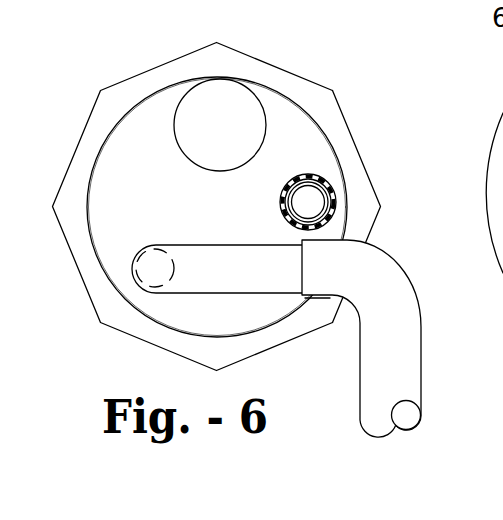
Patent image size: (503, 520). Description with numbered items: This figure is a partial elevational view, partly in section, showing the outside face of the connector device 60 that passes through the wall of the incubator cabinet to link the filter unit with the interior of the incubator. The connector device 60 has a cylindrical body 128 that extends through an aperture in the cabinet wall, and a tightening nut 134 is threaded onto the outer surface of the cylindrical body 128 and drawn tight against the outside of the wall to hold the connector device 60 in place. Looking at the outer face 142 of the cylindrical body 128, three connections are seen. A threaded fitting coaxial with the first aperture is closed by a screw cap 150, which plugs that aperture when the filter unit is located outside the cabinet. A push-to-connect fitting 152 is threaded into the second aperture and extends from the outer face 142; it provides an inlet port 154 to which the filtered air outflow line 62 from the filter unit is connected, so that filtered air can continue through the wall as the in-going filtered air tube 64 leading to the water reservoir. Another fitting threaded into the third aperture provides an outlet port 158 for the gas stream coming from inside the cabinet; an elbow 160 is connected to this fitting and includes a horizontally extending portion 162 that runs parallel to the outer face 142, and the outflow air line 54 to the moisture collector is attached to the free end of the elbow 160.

The outflow air line 54 is at (380, 338).
The connector device 60 is at (207, 195).
The filtered air outflow line 62 is at (364, 194).
The in-going filtered air tube 64 is at (483, 224).
The cylindrical body 128 is at (250, 192).
The tightening nut 134 is at (381, 207).
The outer face 142 is at (200, 193).
The screw cap 150 is at (176, 96).
The fitting 152 is at (371, 207).
The inlet port 154 is at (362, 182).
The outlet port 158 is at (106, 301).
The elbow 160 is at (205, 313).
The horizontally extending portion 162 is at (286, 324).